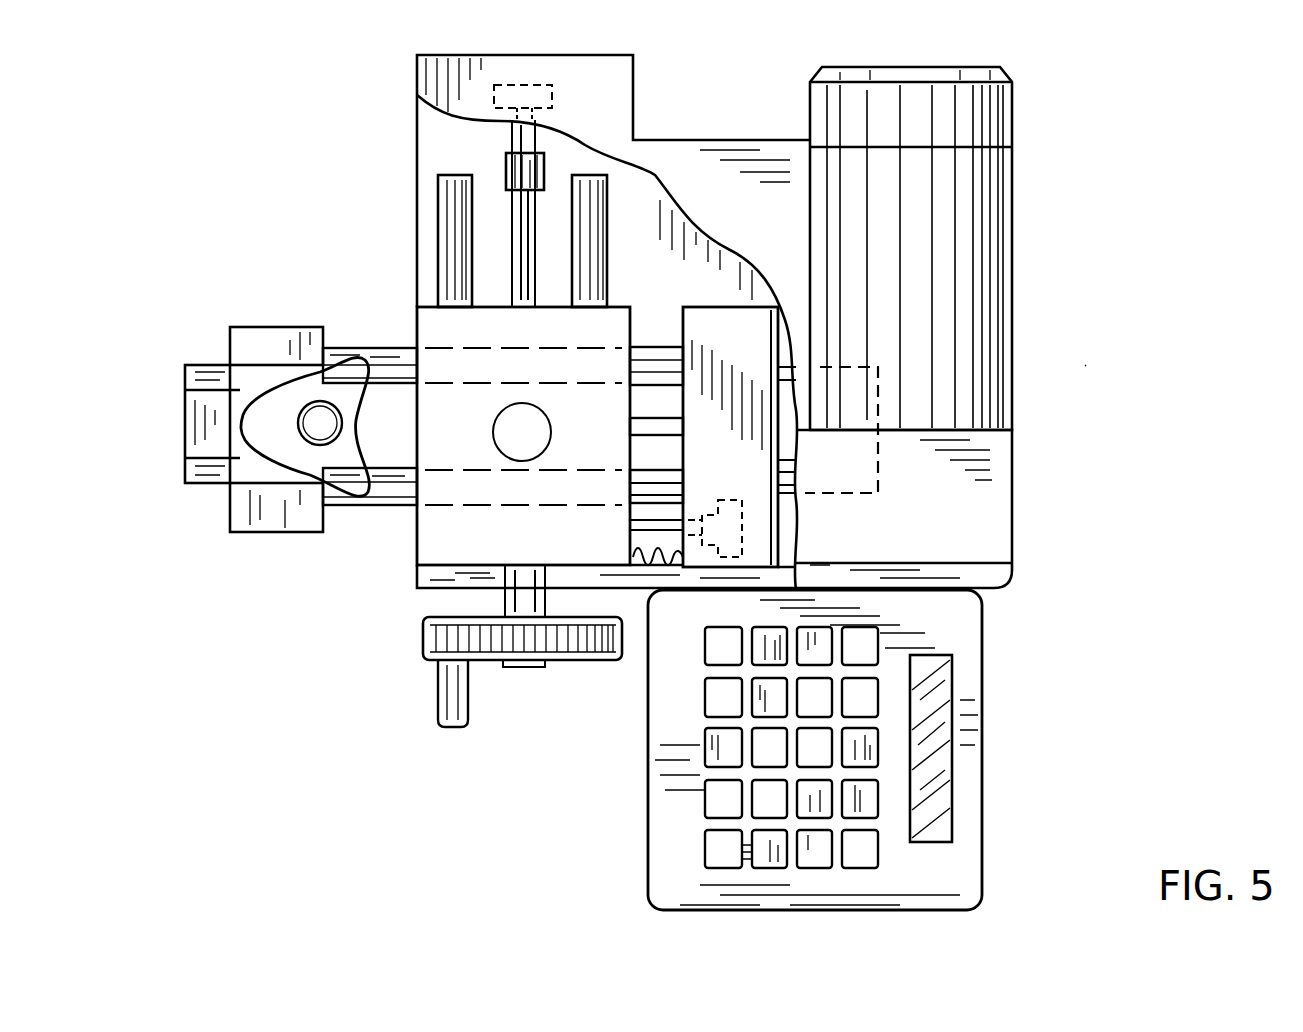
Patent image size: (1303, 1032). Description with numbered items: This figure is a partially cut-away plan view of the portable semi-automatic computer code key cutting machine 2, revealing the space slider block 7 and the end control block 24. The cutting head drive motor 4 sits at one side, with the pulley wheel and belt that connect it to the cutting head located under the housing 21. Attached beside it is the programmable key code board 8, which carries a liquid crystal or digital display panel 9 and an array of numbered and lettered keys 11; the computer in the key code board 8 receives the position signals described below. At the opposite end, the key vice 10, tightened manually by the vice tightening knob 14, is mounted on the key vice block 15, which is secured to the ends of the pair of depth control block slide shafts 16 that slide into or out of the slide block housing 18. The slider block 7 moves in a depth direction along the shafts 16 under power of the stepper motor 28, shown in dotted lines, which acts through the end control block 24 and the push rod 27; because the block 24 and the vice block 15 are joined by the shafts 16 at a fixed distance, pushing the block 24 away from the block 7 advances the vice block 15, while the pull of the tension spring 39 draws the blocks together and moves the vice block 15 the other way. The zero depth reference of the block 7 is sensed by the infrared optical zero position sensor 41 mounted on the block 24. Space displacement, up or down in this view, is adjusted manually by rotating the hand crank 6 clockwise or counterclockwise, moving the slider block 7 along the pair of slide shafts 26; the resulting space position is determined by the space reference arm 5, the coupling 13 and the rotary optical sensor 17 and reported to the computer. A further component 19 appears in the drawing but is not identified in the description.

The portable semi-automatic computer code key cutting machine 2 is at (1085, 365).
The cutting head drive motor 4 is at (1015, 250).
The space reference arm 5 is at (512, 255).
The hand crank 6 is at (585, 665).
The space slider block 7 is at (435, 540).
The programmable key code board 8 is at (987, 755).
The display panel 9 is at (930, 820).
The key vice 10 is at (183, 420).
The keys 11 is at (705, 695).
The coupling 13 is at (506, 170).
The vice tightening knob 14 is at (270, 395).
The key vice block 15 is at (228, 507).
The depth control block slide shafts 16 is at (380, 345).
The rotary optical sensor 17 is at (552, 97).
The slide block housing 18 is at (425, 583).
The housing 19 is at (417, 73).
The housing 21 is at (1003, 510).
The end control block 24 is at (738, 322).
The slide block slide shafts 26 is at (447, 200).
The push rod 27 is at (655, 425).
The stepper motor 28 is at (846, 494).
The tension spring 39 is at (789, 730).
The infrared optical zero position sensor 41 is at (738, 500).